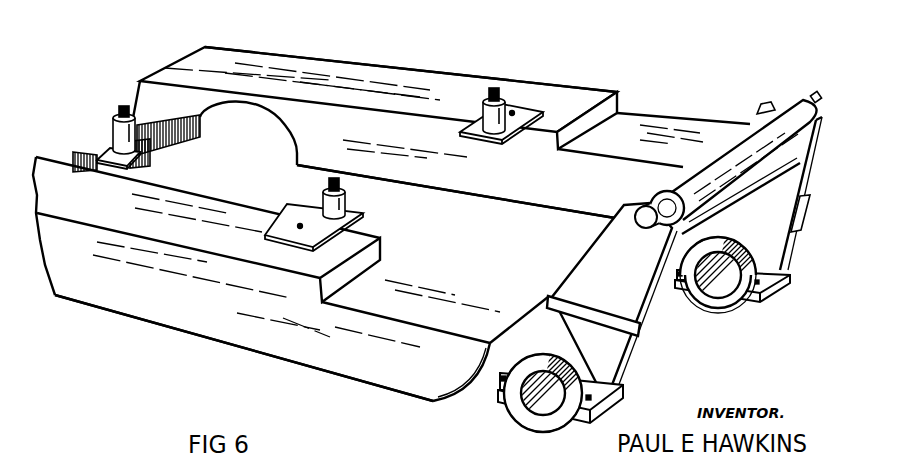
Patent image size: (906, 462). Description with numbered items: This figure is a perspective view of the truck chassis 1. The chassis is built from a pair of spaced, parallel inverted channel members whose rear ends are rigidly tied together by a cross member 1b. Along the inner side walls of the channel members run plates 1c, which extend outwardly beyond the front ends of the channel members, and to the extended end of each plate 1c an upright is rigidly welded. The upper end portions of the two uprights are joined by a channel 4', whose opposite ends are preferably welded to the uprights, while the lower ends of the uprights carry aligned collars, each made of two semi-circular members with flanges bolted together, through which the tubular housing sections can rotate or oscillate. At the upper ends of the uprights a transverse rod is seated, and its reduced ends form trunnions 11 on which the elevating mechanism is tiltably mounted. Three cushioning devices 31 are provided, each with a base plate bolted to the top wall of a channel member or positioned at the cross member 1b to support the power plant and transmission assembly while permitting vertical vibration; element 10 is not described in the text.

The truck chassis 1 is at (391, 224).
The cross member 1b is at (82, 136).
The plate 1c is at (593, 311).
The channel 4' is at (741, 196).
The roller 10 is at (672, 181).
The trunnion 11 is at (655, 231).
The cushioning device 31 is at (346, 205).